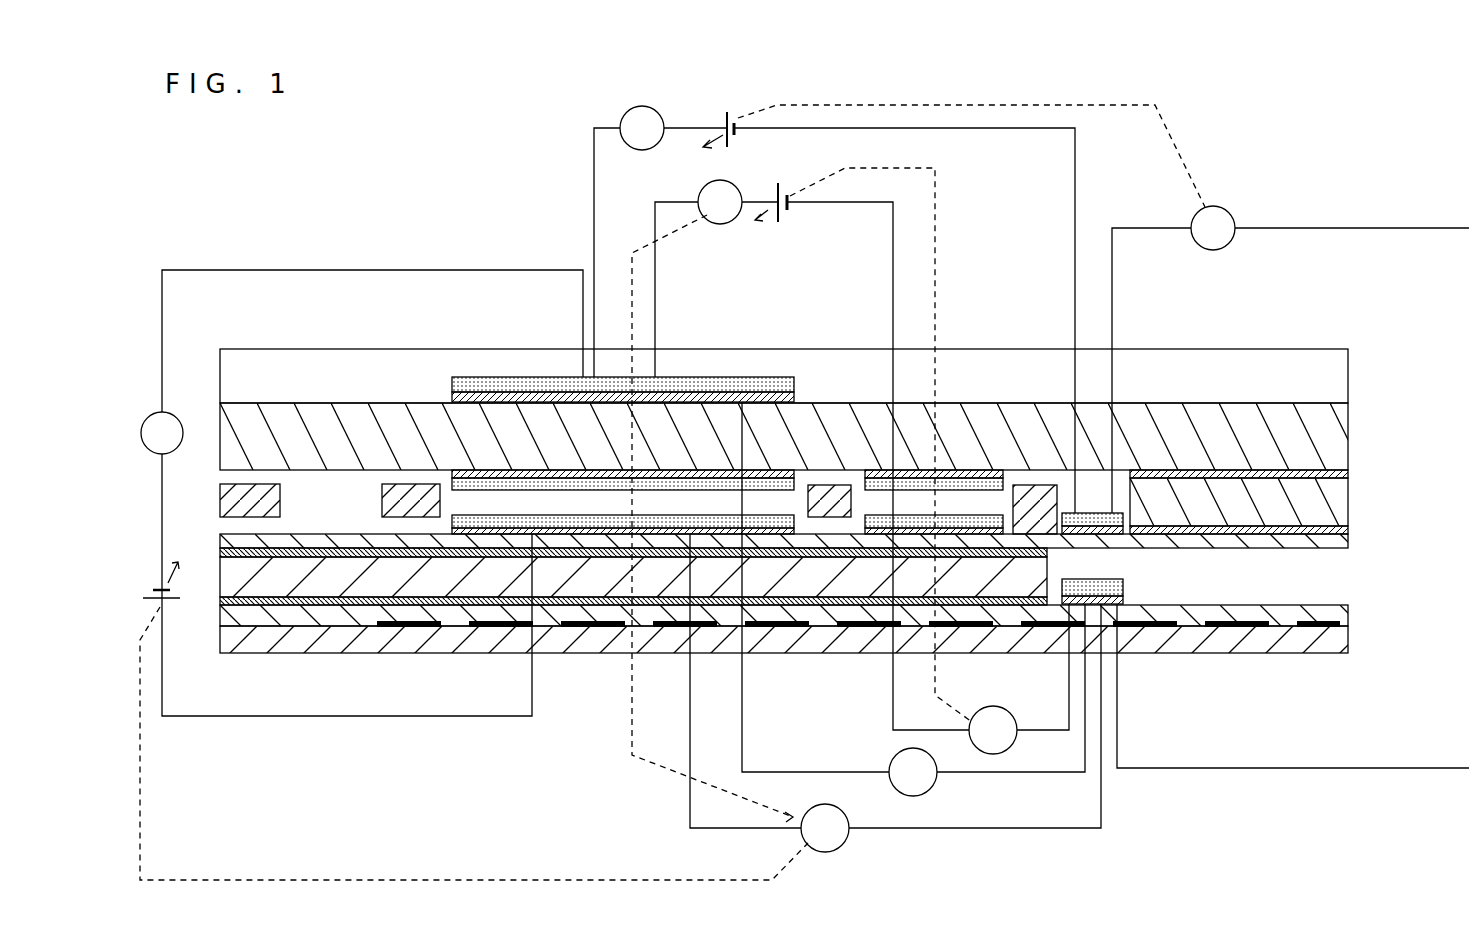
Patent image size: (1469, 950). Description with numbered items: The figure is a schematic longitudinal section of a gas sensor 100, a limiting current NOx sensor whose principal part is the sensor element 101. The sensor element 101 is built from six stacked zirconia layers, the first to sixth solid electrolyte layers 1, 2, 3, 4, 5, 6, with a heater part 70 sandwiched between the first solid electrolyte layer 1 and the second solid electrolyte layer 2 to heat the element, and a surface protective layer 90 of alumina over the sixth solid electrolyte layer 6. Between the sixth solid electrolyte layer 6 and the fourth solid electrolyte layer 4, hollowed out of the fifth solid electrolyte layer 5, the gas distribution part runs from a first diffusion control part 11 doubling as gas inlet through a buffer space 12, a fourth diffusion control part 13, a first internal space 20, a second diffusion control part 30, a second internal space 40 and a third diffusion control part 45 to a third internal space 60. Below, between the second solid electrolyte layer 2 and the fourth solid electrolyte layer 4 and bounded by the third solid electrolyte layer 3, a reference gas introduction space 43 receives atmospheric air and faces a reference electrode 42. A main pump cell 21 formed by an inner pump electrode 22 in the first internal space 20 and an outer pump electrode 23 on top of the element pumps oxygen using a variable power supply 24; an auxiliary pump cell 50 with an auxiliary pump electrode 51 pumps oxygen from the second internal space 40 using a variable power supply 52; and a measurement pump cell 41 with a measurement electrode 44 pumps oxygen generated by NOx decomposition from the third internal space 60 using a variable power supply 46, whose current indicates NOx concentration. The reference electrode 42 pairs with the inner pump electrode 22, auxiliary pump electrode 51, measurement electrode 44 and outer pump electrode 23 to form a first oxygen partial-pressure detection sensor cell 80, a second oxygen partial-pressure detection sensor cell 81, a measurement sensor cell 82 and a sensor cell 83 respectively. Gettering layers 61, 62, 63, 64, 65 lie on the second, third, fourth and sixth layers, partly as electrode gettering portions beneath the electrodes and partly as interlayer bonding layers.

The first solid electrolyte layer 1 is at (1350, 642).
The second solid electrolyte layer 2 is at (1350, 612).
The third solid electrolyte layer 3 is at (232, 575).
The fourth solid electrolyte layer 4 is at (1350, 547).
The fifth solid electrolyte layer 5 is at (1350, 502).
The sixth solid electrolyte layer 6 is at (1350, 432).
The first diffusion control part 11 is at (262, 497).
The buffer space 12 is at (330, 500).
The fourth diffusion control part 13 is at (405, 497).
The first internal space 20 is at (555, 497).
The main pump cell 21 is at (355, 268).
The inner pump electrode 22 is at (476, 484).
The outer pump electrode 23 is at (604, 367).
The variable power supply 24 is at (150, 592).
The second diffusion control part 30 is at (830, 485).
The second internal space 40 is at (917, 503).
The measurement pump cell 41 is at (613, 123).
The reference electrode 42 is at (1110, 578).
The reference gas introduction space 43 is at (1320, 583).
The measurement electrode 44 is at (1098, 510).
The third diffusion control part 45 is at (1025, 487).
The variable power supply 46 is at (731, 112).
The auxiliary pump cell 50 is at (668, 320).
The auxiliary pump electrode 51 is at (935, 487).
The variable power supply 52 is at (780, 222).
The third internal space 60 is at (1120, 488).
The gettering layer 61 is at (817, 603).
The gettering layer 62 is at (565, 557).
The gettering layer 63 is at (470, 528).
The gettering layer 64 is at (540, 488).
The gettering layer 65 is at (767, 376).
The heater part 70 is at (395, 628).
The first oxygen partial-pressure detection sensor cell 80 is at (875, 840).
The second oxygen partial-pressure detection sensor cell 81 is at (876, 712).
The measurement sensor cell 82 is at (1285, 221).
The sensor cell 83 is at (951, 780).
The surface protective layer 90 is at (1350, 375).
The gas sensor 100 is at (260, 182).
The sensor element 101 is at (1242, 349).